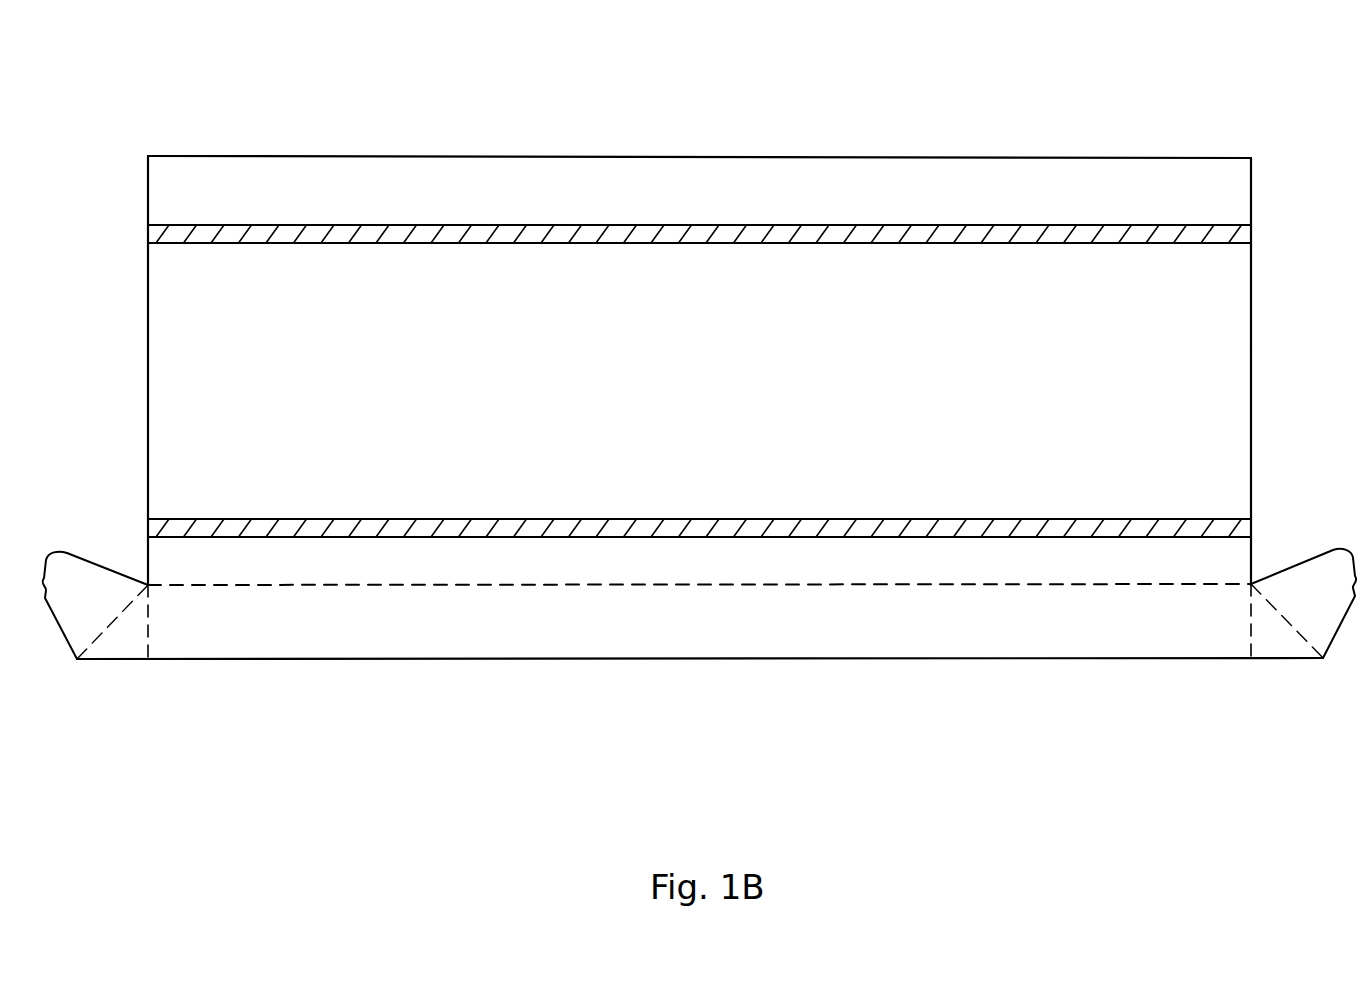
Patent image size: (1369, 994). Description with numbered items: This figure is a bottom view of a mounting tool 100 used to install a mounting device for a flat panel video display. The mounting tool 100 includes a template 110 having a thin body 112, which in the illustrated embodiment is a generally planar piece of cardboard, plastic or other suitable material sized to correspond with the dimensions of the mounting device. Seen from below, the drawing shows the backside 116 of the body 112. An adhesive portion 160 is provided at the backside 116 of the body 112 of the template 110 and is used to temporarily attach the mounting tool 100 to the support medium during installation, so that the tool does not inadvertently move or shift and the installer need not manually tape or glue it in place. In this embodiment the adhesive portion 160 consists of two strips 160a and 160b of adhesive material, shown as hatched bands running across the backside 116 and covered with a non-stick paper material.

The mounting tool 100 is at (700, 346).
The template 110 is at (735, 370).
The body 112 is at (1240, 434).
The backside 116 is at (1235, 313).
The adhesive portion 160 is at (699, 375).
The strip of adhesive material 160a is at (738, 224).
The strip of adhesive material 160b is at (762, 538).